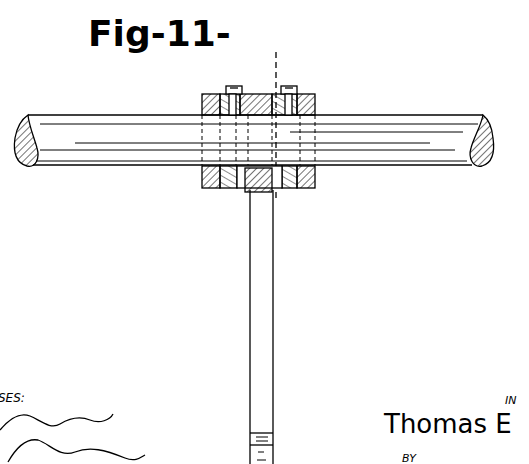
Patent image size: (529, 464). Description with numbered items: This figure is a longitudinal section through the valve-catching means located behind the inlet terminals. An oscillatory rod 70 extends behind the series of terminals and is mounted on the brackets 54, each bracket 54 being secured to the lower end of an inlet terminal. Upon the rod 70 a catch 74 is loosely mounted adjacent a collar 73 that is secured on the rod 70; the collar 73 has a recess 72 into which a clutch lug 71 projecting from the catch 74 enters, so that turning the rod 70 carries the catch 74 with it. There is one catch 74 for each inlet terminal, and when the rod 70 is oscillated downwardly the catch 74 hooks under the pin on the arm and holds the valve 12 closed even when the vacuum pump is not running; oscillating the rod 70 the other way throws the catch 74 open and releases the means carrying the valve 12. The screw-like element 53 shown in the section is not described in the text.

The oscillatory rod 70 is at (103, 124).
The bracket 54 is at (212, 101).
The clamp screw 53 is at (223, 95).
The valve 12 is at (205, 74).
The collar 73 is at (306, 176).
The recess 72 is at (298, 184).
The clutch lug 71 is at (284, 186).
The catch 74 is at (262, 355).